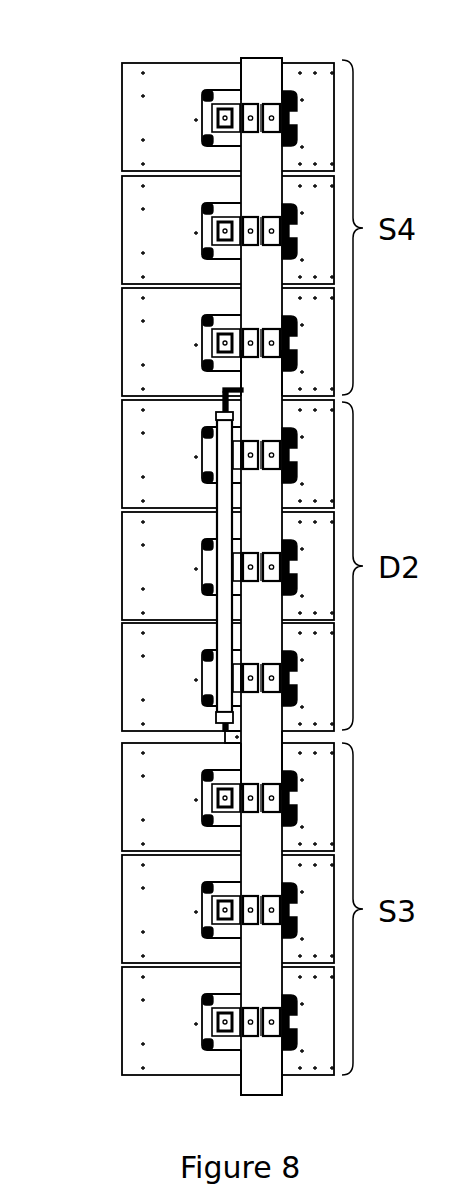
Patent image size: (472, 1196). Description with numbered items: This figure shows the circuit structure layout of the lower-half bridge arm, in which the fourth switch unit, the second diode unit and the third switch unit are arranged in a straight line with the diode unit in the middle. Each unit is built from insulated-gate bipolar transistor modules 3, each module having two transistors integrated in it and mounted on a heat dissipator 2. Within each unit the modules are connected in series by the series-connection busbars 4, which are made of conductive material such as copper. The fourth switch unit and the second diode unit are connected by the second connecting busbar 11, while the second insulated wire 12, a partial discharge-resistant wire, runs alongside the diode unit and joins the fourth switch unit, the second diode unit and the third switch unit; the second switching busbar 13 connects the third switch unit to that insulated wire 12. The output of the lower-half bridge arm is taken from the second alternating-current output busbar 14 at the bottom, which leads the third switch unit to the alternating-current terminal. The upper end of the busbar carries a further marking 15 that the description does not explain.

The heat dissipator 2 is at (157, 124).
The insulated-gate bipolar transistor module 3 is at (198, 212).
The series-connection busbar 4 is at (258, 300).
The second connecting busbar 11 is at (258, 392).
The second insulated wire 12 is at (222, 505).
The second switching busbar 13 is at (260, 763).
The second alternating-current output busbar 14 is at (260, 1063).
The bus bar upper end 15 is at (260, 82).